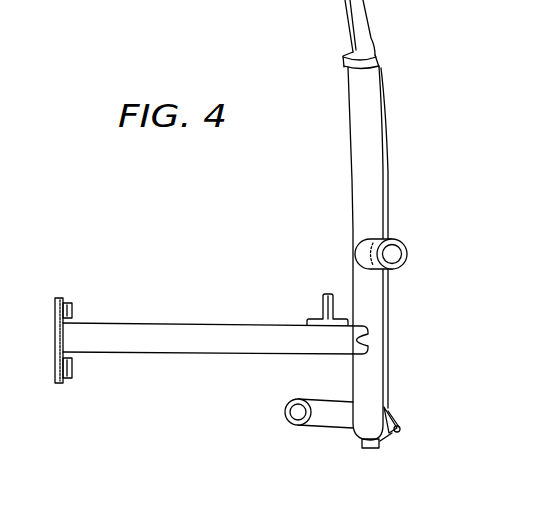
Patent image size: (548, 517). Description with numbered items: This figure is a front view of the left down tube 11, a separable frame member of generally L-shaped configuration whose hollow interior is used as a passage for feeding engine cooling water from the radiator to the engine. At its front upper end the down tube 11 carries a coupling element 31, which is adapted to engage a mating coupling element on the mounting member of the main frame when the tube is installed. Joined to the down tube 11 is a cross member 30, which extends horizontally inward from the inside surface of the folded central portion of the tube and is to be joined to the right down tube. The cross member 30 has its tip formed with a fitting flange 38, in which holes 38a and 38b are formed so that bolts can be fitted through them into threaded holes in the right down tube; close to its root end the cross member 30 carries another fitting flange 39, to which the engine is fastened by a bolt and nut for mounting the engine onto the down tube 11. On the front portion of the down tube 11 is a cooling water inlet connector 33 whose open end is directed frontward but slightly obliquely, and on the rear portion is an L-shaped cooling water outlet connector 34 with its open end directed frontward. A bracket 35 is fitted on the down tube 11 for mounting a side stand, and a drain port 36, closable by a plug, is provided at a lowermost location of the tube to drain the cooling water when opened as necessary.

The left down tube 11 is at (392, 174).
The cross member 30 is at (197, 332).
The coupling element 31 is at (366, 21).
The cooling water inlet connector 33 is at (378, 240).
The cooling water outlet connector 34 is at (322, 408).
The bracket 35 is at (399, 421).
The drain port 36 is at (361, 445).
The fitting flange 38 is at (65, 384).
The hole 38a is at (73, 312).
The hole 38b is at (75, 368).
The fitting flange 39 is at (327, 296).